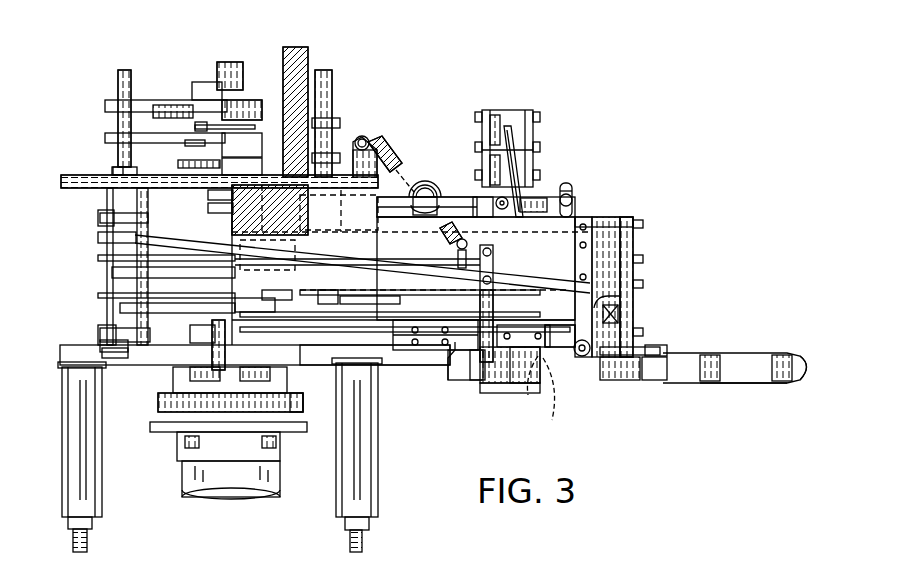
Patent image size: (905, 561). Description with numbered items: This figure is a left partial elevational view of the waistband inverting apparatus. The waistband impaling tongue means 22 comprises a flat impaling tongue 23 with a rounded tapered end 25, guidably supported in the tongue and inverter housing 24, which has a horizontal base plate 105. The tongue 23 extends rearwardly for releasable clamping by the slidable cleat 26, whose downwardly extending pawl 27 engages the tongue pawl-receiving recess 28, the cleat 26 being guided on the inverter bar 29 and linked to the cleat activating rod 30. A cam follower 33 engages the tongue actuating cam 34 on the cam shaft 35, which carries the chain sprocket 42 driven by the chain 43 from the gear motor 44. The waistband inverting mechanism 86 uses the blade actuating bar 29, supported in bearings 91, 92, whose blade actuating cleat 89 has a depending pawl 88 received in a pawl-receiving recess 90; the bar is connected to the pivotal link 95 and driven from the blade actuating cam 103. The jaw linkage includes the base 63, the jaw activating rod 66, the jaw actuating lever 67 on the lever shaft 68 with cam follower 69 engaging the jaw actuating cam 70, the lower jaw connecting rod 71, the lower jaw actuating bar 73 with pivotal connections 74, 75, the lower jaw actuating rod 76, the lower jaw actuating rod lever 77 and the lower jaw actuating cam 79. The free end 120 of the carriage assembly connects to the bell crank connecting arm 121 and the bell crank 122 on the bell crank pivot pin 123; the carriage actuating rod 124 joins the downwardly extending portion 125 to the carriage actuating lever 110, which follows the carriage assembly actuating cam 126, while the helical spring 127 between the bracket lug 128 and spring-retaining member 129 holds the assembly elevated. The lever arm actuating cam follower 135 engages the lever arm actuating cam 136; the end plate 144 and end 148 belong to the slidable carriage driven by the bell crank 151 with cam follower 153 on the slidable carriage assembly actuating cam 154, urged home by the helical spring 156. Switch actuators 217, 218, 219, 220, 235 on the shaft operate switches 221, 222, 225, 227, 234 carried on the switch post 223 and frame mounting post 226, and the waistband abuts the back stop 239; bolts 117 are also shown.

The waistband impaling tongue means 22 is at (737, 378).
The waistband impaling tongue 23 is at (740, 356).
The tongue and inverter housing 24 is at (560, 395).
The tapered end 25 is at (803, 358).
The slidable cleat 26 is at (400, 352).
The pawl 27 is at (455, 356).
The tongue pawl-receiving recess 28 is at (476, 380).
The inverter bar 29 is at (328, 360).
The cleat activating rod 30 is at (430, 318).
The cam follower 33 is at (326, 313).
The tongue actuating cam 34 is at (192, 318).
The cam shaft 35 is at (291, 60).
The chain sprocket 42 is at (176, 410).
The chain 43 is at (298, 405).
The gear motor 44 is at (186, 478).
The base 63 is at (620, 314).
The jaw activating rod 66 is at (612, 300).
The jaw actuating lever 67 is at (98, 295).
The lever shaft 68 is at (116, 169).
The cam follower 69 is at (250, 306).
The jaw actuating cam 70 is at (120, 308).
The lower jaw connecting rod 71 is at (650, 347).
The lower jaw actuating bar 73 is at (584, 263).
The pivotal connection 74 is at (590, 358).
The pivotal connection 75 is at (622, 245).
The lower jaw actuating rod 76 is at (362, 296).
The lower jaw actuating rod lever 77 is at (98, 258).
The lower jaw actuating cam 79 is at (274, 253).
The waistband inverting mechanism 86 is at (560, 348).
The pawl 88 is at (521, 380).
The blade actuating cleat 89 is at (512, 350).
The pawl-receiving recess 90 is at (538, 392).
The bearing 91 is at (222, 345).
The bearing 92 is at (487, 362).
The pivotal link 95 is at (112, 344).
The blade actuating cam 103 is at (156, 365).
The base plate 105 is at (514, 393).
The carriage actuating lever 110 is at (98, 218).
The bolts 117 is at (478, 112).
The free end 120 is at (506, 112).
The bell crank connecting arm 121 is at (520, 190).
The bell crank 122 is at (566, 218).
The bell crank pivot pin 123 is at (592, 222).
The carriage actuating rod 124 is at (353, 253).
The downwardly extending portion 125 is at (480, 198).
The carriage assembly actuating cam 126 is at (189, 232).
The helical spring 127 is at (393, 161).
The bracket lug 128 is at (372, 150).
The spring-retaining member 129 is at (457, 248).
The lever arm actuating cam follower 135 is at (290, 290).
The lever arm actuating cam 136 is at (112, 273).
The end plate 144 is at (432, 183).
The end 148 is at (575, 200).
The bell crank 151 is at (410, 201).
The cam follower 153 is at (334, 120).
The slidable carriage assembly actuating cam 154 is at (210, 197).
The helical spring 156 is at (425, 186).
The switch actuator 217 is at (220, 62).
The switch actuator 218 is at (195, 127).
The switch actuator 219 is at (190, 144).
The switch actuator 220 is at (168, 108).
The switch 221 is at (253, 192).
The switch 222 is at (249, 100).
The switch post 223 is at (323, 72).
The switch 225 is at (196, 82).
The frame mounting post 226 is at (122, 74).
The switch 227 is at (362, 139).
The switch 234 is at (238, 136).
The switch actuator 235 is at (180, 165).
The back stop 239 is at (645, 259).